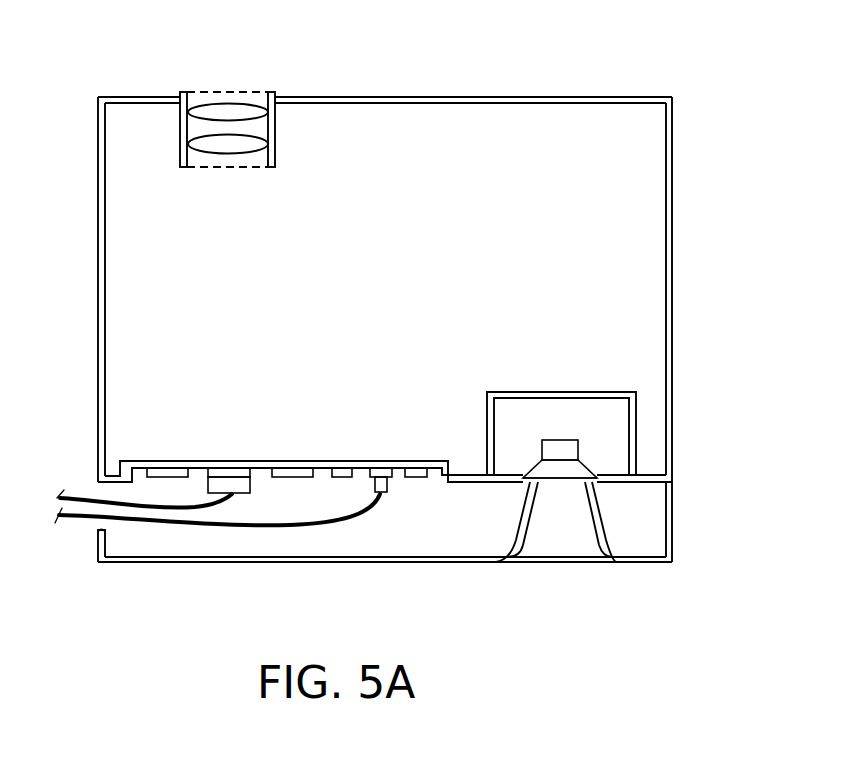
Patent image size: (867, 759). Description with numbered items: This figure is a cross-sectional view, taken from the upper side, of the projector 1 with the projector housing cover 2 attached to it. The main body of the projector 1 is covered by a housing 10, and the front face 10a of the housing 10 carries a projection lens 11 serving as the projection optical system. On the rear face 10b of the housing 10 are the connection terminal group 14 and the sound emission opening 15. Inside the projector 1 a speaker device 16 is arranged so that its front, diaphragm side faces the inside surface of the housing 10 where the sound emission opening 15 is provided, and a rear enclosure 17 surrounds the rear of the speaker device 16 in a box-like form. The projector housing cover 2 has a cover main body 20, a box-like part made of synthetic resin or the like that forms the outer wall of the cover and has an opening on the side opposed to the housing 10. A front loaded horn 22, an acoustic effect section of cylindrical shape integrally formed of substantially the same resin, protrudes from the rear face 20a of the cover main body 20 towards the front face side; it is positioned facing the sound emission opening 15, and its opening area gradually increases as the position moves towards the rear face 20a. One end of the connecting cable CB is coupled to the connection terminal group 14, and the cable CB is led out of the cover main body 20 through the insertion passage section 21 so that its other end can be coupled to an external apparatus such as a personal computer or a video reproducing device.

The projector 1 is at (98, 192).
The housing 10 is at (98, 263).
The front face of the housing 10a is at (553, 97).
The rear face of the housing 10b is at (644, 483).
The projection lens 11 is at (232, 100).
The connection terminal group 14 is at (120, 452).
The sound emission opening 15 is at (558, 483).
The speaker device 16 is at (589, 463).
The rear enclosure 17 is at (603, 392).
The projector housing cover 2 is at (219, 565).
The cover main body 20 is at (291, 565).
The rear face of the cover main body 20a is at (364, 565).
The insertion passage section 21 is at (103, 530).
The front loaded horn 22 is at (594, 540).
The connecting cable CB is at (80, 495).